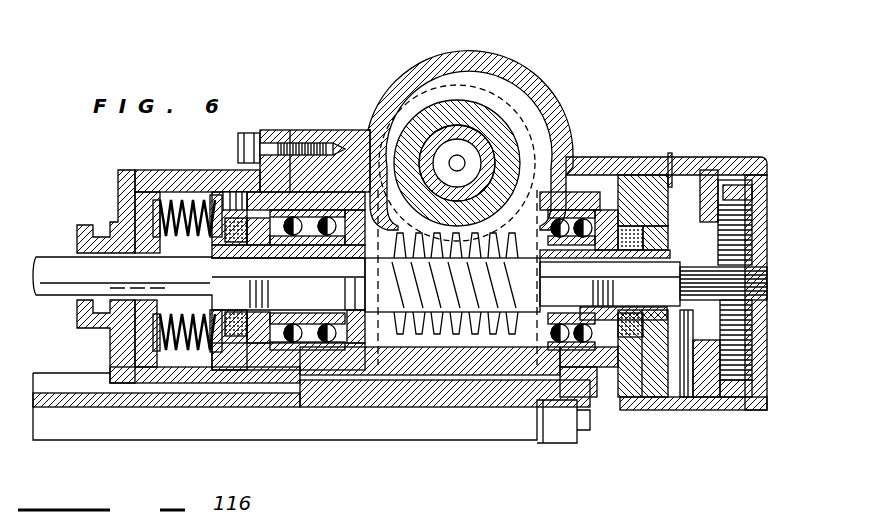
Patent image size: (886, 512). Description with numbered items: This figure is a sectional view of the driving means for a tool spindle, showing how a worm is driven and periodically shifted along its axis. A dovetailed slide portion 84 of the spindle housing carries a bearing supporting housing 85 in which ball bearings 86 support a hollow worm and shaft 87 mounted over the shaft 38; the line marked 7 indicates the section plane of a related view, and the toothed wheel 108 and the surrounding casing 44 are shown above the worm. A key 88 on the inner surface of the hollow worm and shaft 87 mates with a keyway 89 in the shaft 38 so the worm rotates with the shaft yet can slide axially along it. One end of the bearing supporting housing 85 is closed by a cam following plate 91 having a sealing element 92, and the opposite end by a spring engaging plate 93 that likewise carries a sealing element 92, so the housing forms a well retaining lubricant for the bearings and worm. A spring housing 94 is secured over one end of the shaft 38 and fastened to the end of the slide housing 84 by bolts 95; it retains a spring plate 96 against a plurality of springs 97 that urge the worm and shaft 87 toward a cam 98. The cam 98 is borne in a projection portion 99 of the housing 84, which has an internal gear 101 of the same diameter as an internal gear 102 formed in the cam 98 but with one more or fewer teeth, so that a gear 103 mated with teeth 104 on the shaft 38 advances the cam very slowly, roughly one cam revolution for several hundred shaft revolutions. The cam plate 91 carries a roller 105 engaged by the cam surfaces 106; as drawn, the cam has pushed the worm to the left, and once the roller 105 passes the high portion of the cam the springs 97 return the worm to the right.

The section line 7- 7 is at (486, 22).
The shaft 38 is at (618, 270).
The gear housing 44 is at (530, 97).
The dovetailed slide portion 84 is at (508, 428).
The bearing supporting housing 85 is at (628, 390).
The ball bearings 86 is at (590, 214).
The hollow worm and shaft 87 is at (437, 323).
The key 88 is at (580, 268).
The keyway 89 is at (610, 205).
The cam following plate 91 is at (652, 393).
The sealing element 92 is at (232, 258).
The spring engaging plate 93 is at (221, 192).
The spring housing 94 is at (118, 174).
The bolts 95 is at (252, 137).
The spring plate 96 is at (146, 200).
The springs 97 is at (183, 203).
The cam 98 is at (702, 367).
The projection portion 99 is at (740, 380).
The internal gear 101 is at (745, 380).
The internal gear 102 is at (730, 383).
The gear 103 is at (742, 213).
The teeth 104 is at (680, 287).
The roller 105 is at (693, 367).
The cam surfaces 106 is at (702, 227).
The worm wheel 108 is at (483, 110).